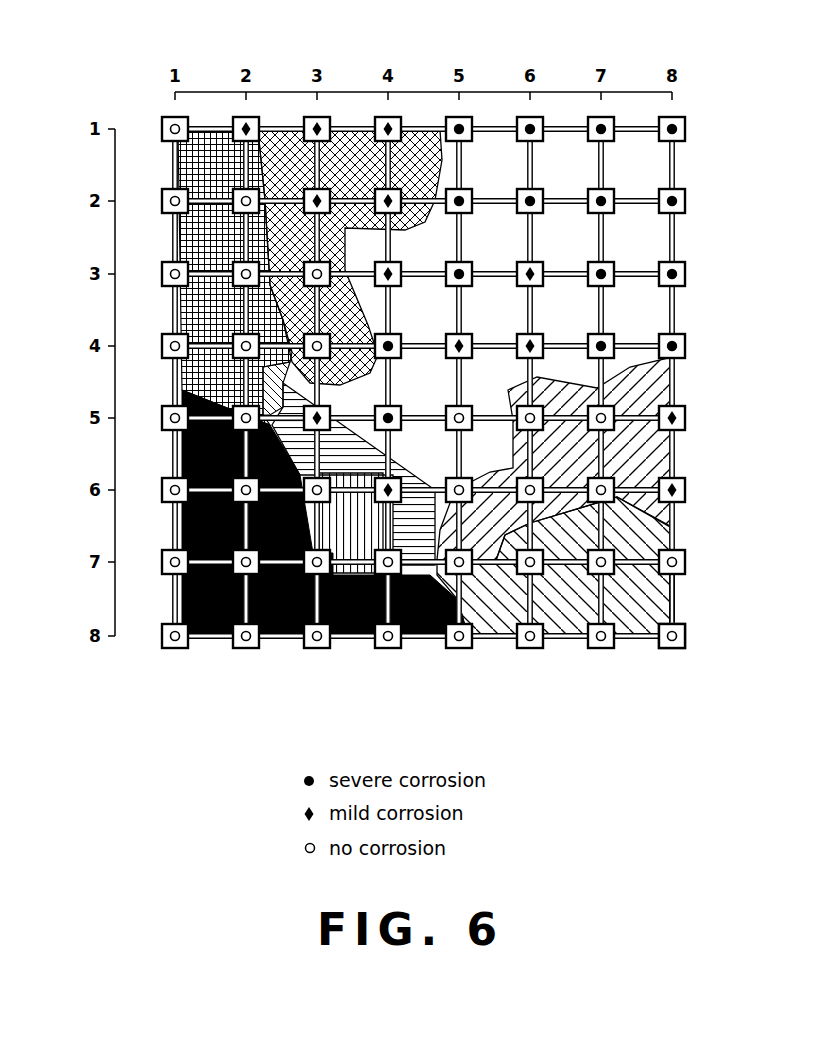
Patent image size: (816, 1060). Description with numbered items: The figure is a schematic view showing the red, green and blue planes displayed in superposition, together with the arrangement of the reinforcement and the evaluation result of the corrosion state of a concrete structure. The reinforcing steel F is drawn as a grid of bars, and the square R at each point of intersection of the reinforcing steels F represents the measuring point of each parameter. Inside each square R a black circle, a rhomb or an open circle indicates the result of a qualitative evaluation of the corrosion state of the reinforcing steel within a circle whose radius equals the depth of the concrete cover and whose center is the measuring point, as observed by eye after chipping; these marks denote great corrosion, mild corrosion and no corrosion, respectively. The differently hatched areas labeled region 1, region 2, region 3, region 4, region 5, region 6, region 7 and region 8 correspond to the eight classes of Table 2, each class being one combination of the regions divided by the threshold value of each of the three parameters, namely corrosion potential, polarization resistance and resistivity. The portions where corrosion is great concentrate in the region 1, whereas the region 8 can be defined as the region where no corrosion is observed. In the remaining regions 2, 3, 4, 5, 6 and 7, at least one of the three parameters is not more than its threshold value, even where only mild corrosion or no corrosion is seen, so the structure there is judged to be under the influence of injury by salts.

The region of class No. 1 is at (648, 237).
The region of class No. 2 is at (358, 160).
The region of class No. 3 is at (653, 447).
The region of class No. 4 is at (345, 428).
The region of class No. 5 is at (200, 230).
The region of class No. 6 is at (365, 528).
The region of class No. 7 is at (581, 612).
The region of class No. 8 is at (213, 638).
The reinforcing steel F is at (676, 589).
The square (measuring point) R is at (688, 634).